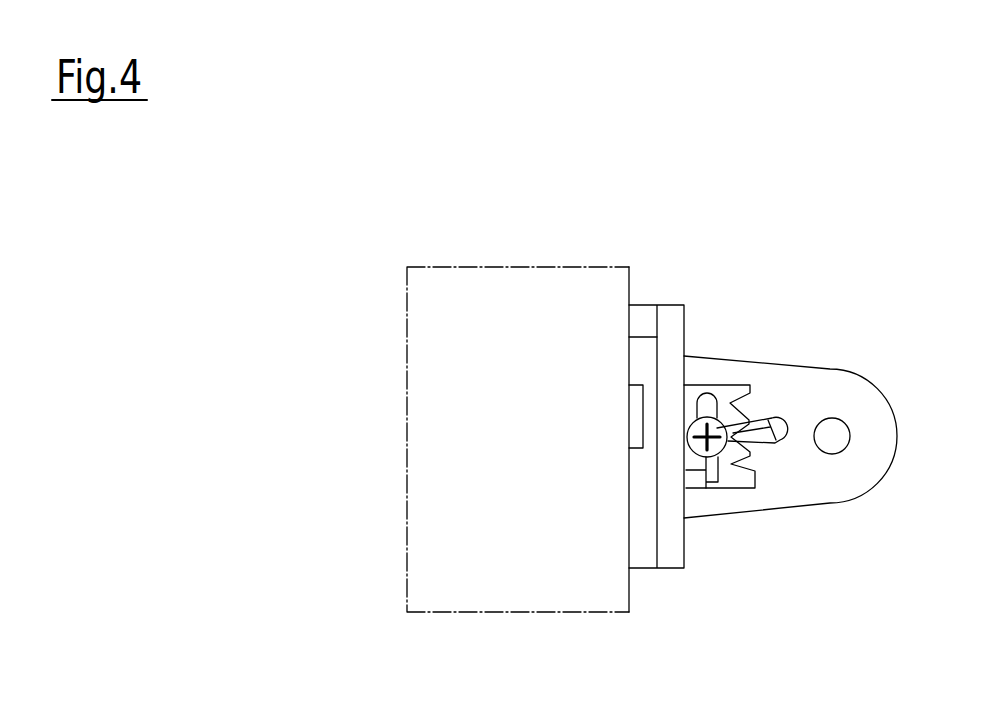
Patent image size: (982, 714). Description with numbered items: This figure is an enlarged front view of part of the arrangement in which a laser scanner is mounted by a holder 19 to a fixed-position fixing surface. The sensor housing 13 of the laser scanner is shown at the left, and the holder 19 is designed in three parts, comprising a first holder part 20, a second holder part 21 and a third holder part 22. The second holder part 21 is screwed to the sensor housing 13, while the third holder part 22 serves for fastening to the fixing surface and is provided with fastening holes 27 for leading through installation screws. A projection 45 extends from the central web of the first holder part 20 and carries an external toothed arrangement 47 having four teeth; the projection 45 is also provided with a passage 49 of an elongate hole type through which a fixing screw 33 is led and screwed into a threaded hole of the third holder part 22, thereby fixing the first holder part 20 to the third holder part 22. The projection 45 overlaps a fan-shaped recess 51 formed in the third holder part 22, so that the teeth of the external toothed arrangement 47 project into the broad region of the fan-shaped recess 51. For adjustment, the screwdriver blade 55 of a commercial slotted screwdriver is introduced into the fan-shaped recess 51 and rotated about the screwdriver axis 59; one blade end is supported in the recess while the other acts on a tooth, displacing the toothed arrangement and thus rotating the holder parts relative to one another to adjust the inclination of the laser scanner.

The sensor housing 13 is at (549, 297).
The holder 19 is at (683, 230).
The first holder part 20 is at (670, 550).
The second holder part 21 is at (640, 348).
The third holder part 22 is at (845, 392).
The fastening hole 27 is at (837, 427).
The fixing screw 33 is at (722, 410).
The projection 45 is at (730, 480).
The external toothed arrangement 47 is at (755, 400).
The passage 49 is at (703, 410).
The fan-shaped recess 51 is at (763, 447).
The screwdriver blade 55 is at (776, 434).
The screwdriver axis 59 is at (758, 418).